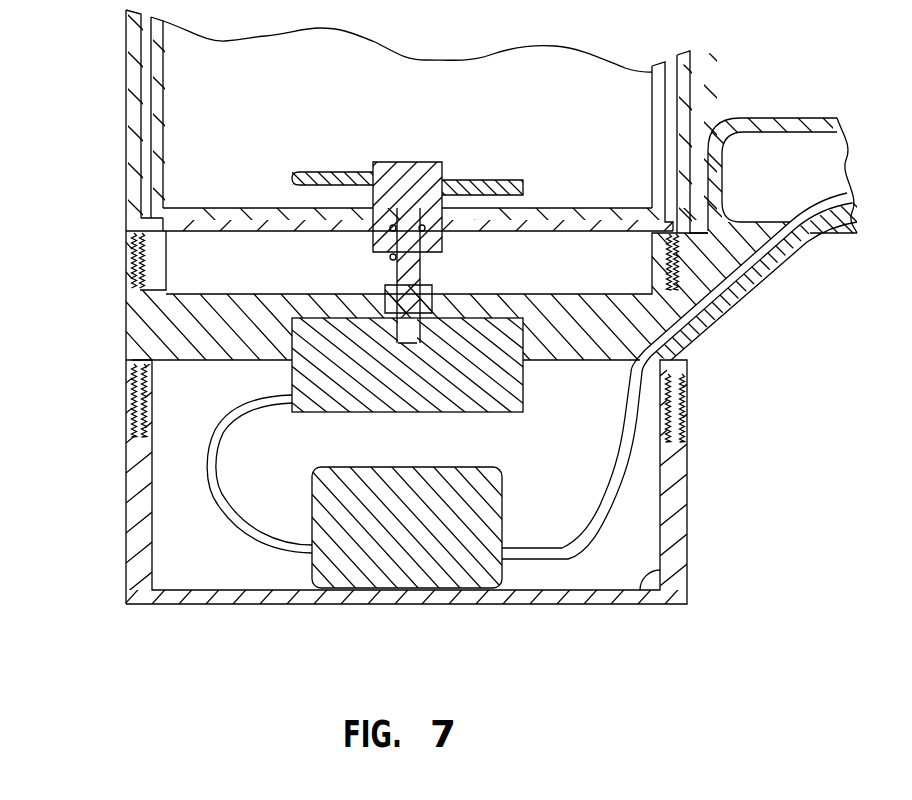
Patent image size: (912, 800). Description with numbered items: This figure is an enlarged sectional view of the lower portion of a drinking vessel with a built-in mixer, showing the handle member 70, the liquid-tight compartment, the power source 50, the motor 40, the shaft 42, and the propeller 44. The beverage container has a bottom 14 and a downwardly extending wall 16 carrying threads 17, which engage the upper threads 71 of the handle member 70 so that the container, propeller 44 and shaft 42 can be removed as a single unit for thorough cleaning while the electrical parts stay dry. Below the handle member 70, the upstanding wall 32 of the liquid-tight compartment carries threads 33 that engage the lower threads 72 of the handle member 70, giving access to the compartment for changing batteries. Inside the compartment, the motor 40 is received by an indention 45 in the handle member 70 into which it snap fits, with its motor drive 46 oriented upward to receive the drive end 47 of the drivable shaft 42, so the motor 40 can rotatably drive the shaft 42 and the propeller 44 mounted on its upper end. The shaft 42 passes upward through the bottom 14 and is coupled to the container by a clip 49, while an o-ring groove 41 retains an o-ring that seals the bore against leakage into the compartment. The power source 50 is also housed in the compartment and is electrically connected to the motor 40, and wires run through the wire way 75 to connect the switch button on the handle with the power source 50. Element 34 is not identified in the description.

The bottom 14 is at (602, 208).
The downwardly extending wall 16 is at (168, 242).
The threads 17 is at (138, 268).
The upstanding wall 32 is at (126, 550).
The threads 33 is at (147, 395).
The housing corner fillet 34 is at (660, 580).
The motor 40 is at (523, 392).
The o-ring groove 41 is at (445, 228).
The drivable shaft 42 is at (392, 260).
The propeller 44 is at (327, 172).
The indention 45 is at (292, 357).
The motor drive 46 is at (385, 293).
The drive end 47 is at (435, 300).
The clip 49 is at (422, 256).
The power source 50 is at (502, 527).
The handle member 70 is at (126, 322).
The upper threads 71 is at (670, 275).
The lower threads 72 is at (676, 410).
The wire way 75 is at (748, 278).